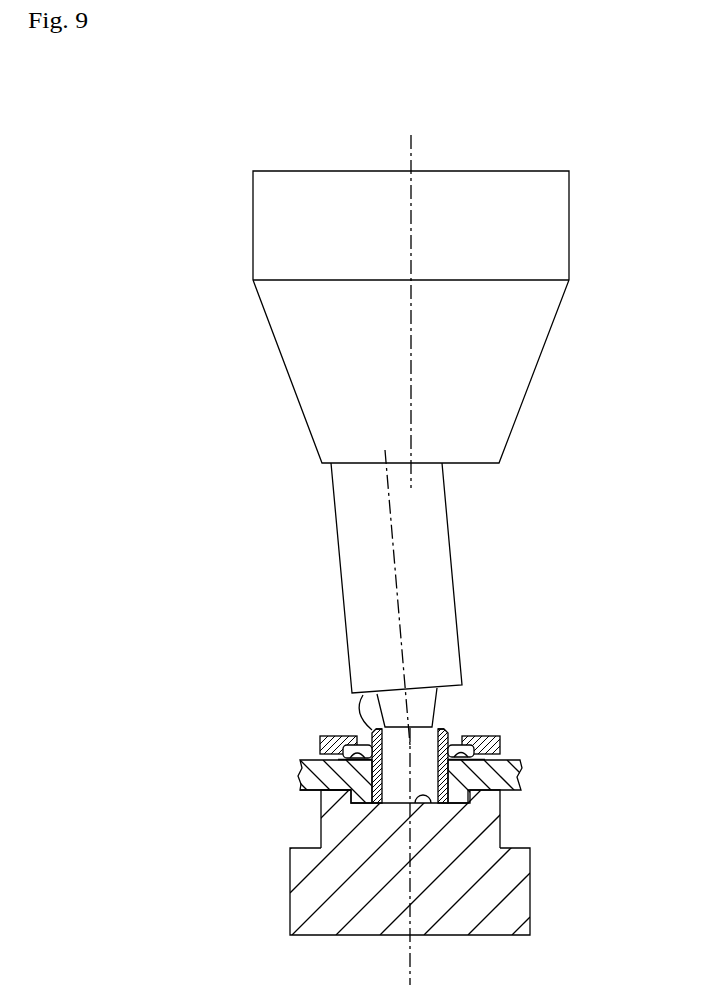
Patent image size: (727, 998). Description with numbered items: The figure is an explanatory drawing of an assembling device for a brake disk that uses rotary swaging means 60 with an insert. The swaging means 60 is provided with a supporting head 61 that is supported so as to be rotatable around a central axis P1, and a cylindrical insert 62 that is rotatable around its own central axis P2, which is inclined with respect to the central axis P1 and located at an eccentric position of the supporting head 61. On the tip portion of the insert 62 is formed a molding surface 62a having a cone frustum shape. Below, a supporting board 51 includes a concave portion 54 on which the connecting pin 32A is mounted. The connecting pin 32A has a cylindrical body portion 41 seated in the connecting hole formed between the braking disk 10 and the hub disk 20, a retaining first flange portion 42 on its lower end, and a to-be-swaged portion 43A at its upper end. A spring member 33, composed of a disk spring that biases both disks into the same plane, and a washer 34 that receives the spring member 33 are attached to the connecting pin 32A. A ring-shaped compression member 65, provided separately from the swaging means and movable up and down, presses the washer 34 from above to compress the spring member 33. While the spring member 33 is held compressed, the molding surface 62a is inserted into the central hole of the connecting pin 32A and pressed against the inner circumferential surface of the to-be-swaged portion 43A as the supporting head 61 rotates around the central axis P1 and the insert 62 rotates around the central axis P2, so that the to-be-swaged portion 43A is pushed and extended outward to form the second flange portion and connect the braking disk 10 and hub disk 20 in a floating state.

The central axis P1 is at (413, 197).
The central axis P2 is at (395, 562).
The braking disk 10 is at (508, 788).
The hub disk 20 is at (300, 758).
The connecting pin 32A is at (453, 731).
The spring member 33 is at (320, 738).
The washer 34 is at (347, 743).
The body portion 41 is at (300, 786).
The first flange portion 42 is at (370, 804).
The to-be-swaged portion 43A is at (363, 707).
The supporting board 51 is at (530, 890).
The concave portion 54 is at (423, 804).
The swaging means 60 is at (522, 658).
The supporting head 61 is at (540, 362).
The insert 62 is at (453, 562).
The molding surface 62a is at (437, 707).
The compression member 65 is at (500, 743).